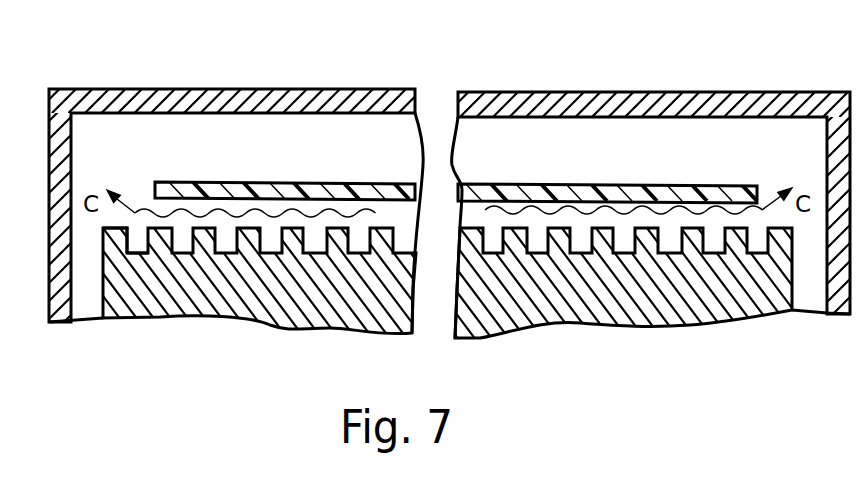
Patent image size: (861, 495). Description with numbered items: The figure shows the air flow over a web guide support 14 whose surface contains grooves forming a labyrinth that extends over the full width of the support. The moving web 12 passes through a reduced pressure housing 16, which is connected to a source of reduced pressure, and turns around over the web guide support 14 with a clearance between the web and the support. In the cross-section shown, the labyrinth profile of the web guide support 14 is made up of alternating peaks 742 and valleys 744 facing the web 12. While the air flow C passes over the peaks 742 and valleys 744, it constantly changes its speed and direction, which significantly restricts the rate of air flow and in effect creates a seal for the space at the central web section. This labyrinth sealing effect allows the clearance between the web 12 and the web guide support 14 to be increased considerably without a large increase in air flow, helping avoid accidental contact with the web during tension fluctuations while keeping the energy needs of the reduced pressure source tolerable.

The moving web 12 is at (280, 182).
The web guide support 14 is at (613, 290).
The reduced pressure housing 16 is at (648, 92).
The peaks 742 is at (160, 222).
The valleys 744 is at (137, 255).